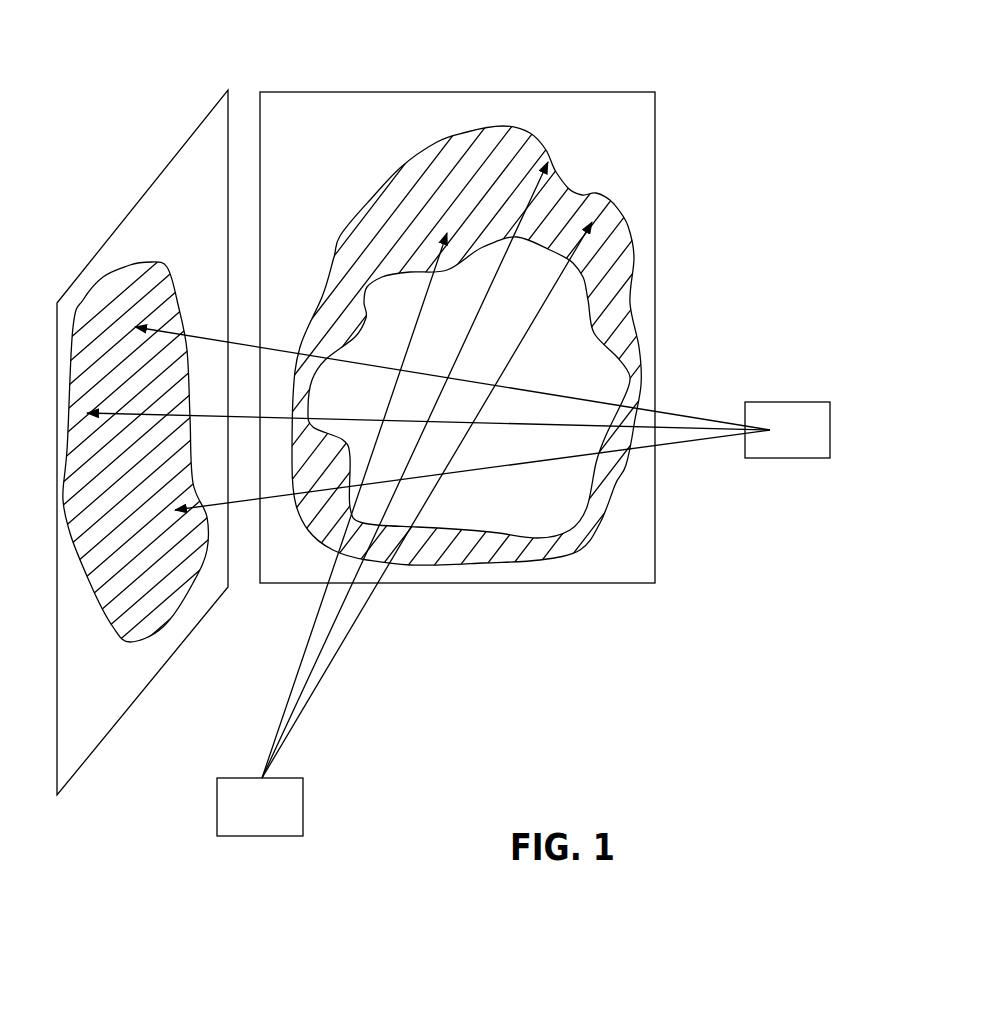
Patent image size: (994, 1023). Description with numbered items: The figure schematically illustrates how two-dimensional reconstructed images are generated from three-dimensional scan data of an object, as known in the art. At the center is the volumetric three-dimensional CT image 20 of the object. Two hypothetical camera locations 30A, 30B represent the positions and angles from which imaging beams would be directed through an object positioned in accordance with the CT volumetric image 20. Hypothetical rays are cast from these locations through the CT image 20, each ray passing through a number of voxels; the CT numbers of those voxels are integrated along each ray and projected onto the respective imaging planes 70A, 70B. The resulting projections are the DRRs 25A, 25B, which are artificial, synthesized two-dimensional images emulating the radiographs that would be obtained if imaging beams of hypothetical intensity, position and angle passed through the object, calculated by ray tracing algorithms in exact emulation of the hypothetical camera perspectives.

The volumetric 3D CT image 20 is at (525, 515).
The DRR 25A is at (508, 148).
The DRR 25B is at (112, 305).
The hypothetical camera location 30A is at (292, 797).
The hypothetical camera location 30B is at (775, 452).
The imaging plane 70A is at (612, 112).
The imaging plane 70B is at (210, 137).